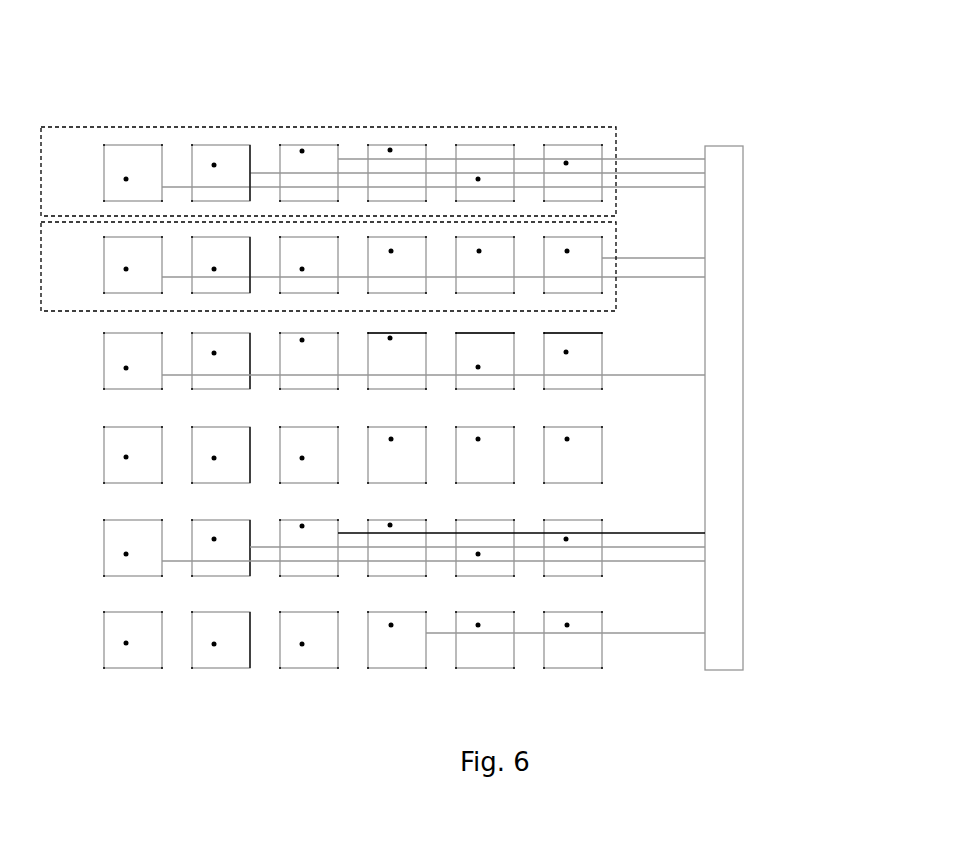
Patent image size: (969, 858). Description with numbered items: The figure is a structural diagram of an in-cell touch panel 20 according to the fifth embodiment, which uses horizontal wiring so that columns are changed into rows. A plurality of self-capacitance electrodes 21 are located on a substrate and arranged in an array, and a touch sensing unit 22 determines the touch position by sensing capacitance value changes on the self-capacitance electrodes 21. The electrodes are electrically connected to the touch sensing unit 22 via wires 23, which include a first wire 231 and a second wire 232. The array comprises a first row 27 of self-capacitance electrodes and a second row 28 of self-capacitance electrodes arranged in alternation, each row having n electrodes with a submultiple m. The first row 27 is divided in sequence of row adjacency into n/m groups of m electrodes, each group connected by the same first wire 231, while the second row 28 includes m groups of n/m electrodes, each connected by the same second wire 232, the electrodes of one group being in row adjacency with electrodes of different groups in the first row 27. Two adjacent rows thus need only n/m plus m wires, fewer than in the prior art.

The in-cell touch panel 20 is at (762, 235).
The self-capacitance electrode 21 is at (398, 147).
The touch sensing unit 22 is at (725, 146).
The wires 23 is at (673, 69).
The first wire 231 is at (657, 277).
The second wire 232 is at (687, 185).
The first row of self-capacitance electrodes 27 is at (328, 266).
The second row of self-capacitance electrodes 28 is at (328, 139).